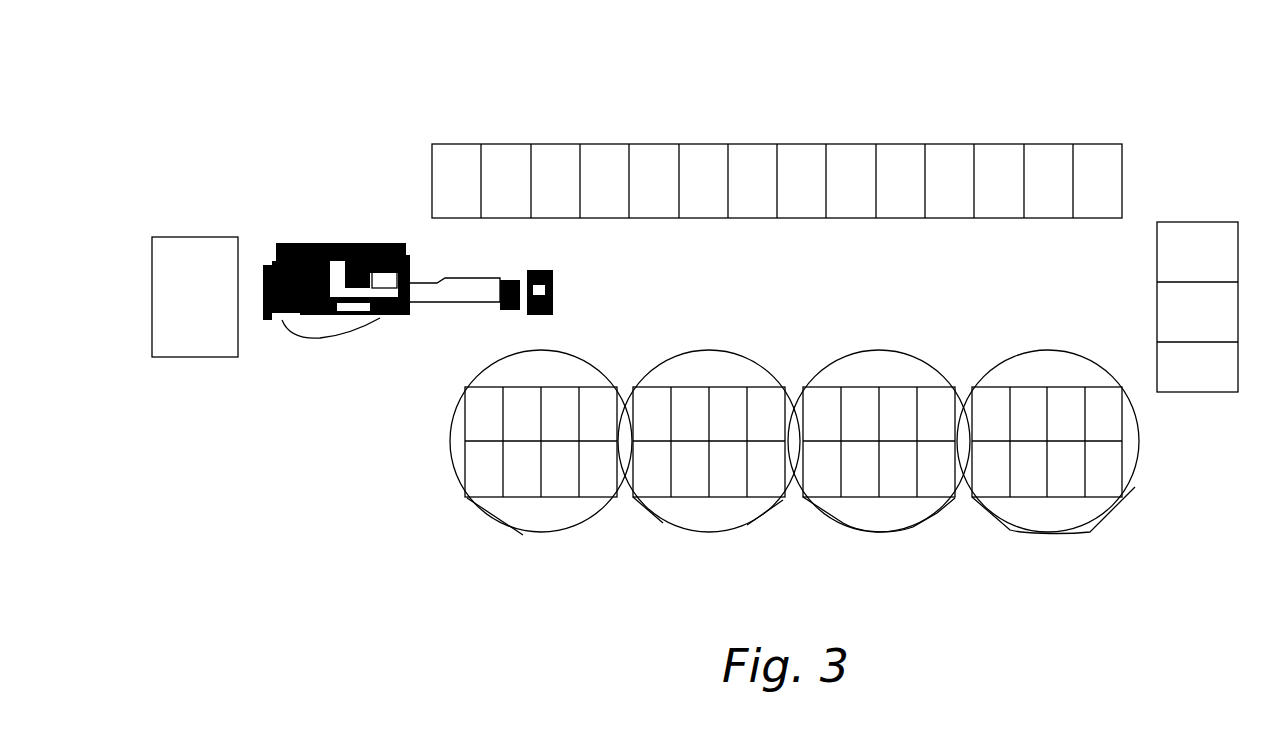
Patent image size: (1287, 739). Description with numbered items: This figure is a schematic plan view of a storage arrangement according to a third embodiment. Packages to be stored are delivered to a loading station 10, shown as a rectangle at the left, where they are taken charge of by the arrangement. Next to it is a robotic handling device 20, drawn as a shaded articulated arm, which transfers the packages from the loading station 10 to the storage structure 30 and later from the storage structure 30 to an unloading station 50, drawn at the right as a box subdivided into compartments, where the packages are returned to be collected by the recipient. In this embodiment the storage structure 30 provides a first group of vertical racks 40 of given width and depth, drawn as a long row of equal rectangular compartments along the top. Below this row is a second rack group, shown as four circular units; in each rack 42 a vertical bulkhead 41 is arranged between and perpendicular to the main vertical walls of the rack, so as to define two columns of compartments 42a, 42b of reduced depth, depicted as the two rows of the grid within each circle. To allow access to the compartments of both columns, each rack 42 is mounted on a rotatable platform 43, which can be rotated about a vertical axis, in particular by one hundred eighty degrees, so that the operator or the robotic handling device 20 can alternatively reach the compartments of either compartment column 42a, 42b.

The loading station 10 is at (202, 345).
The robot 20 is at (342, 345).
The storage structure 30 is at (777, 129).
The vertical racks 40 is at (512, 143).
The vertical bulkhead 41 is at (557, 441).
The rack 42 is at (790, 455).
The compartment column 42a is at (458, 388).
The compartment column 42b is at (465, 463).
The rotatable platform 43 is at (660, 525).
The unloading station 50 is at (1212, 312).